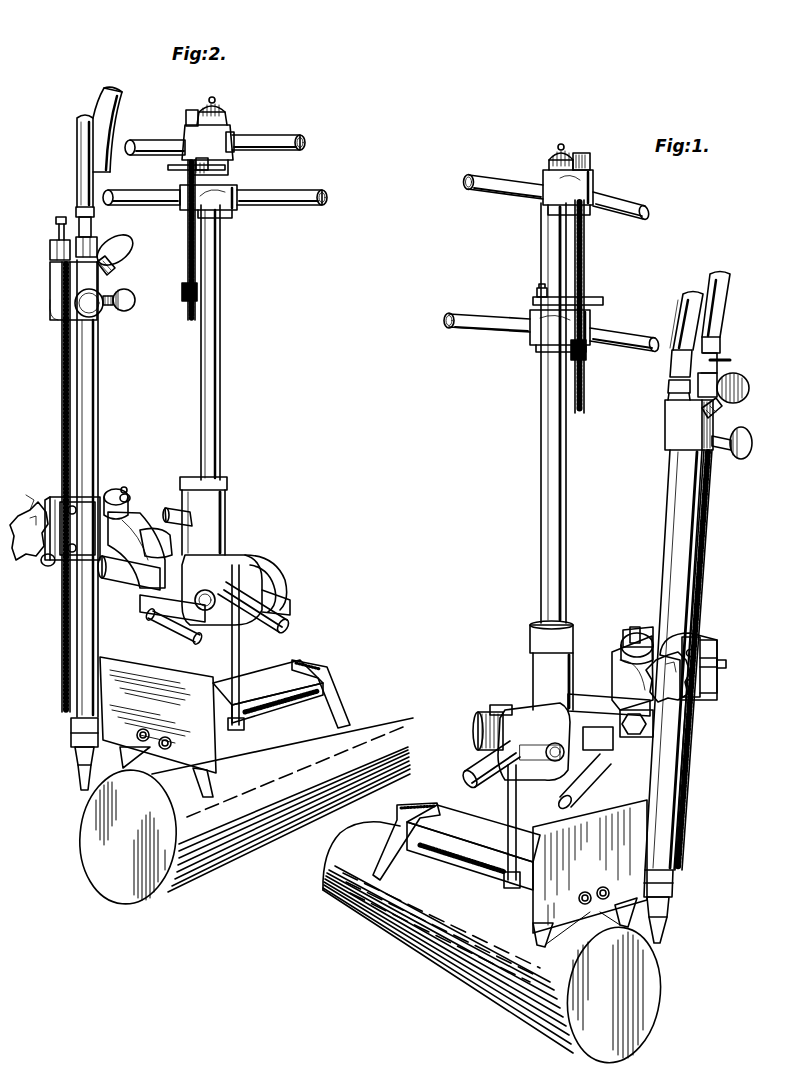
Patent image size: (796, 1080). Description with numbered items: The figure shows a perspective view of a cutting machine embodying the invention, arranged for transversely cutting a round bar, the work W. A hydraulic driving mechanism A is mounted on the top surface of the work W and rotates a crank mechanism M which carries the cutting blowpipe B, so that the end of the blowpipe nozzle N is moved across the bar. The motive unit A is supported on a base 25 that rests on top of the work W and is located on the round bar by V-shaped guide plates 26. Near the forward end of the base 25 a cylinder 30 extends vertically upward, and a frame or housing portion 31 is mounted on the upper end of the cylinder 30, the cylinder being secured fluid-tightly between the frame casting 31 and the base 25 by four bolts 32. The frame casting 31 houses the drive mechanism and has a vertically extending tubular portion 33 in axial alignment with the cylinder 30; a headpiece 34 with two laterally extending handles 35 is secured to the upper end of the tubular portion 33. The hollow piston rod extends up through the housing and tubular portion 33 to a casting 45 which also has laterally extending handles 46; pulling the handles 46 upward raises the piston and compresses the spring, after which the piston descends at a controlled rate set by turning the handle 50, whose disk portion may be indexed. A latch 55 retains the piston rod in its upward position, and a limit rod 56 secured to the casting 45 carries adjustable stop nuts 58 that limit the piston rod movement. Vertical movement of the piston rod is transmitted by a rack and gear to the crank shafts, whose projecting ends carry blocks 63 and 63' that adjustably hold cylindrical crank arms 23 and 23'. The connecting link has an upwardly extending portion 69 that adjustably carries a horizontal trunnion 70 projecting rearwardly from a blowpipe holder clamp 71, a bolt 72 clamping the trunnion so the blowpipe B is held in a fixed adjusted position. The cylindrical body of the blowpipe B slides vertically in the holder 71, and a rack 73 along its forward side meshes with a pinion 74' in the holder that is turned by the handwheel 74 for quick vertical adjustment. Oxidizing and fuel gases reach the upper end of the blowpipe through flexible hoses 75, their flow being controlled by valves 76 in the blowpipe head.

In FIG. 2, the crank arm 23 is at (282, 602).
In FIG. 1, the crank arm 23 is at (519, 776).
In FIG. 2, the adjustable crank arm 23' is at (155, 629).
In FIG. 2, the base 25 is at (302, 666).
In FIG. 1, the base 25 is at (480, 850).
In FIG. 2, the guide plates 26 is at (346, 702).
In FIG. 1, the guide plates 26 is at (390, 856).
In FIG. 2, the cylinder 30 is at (215, 660).
In FIG. 1, the cylinder 30 is at (582, 812).
In FIG. 2, the frame or housing portion 31 is at (208, 520).
In FIG. 1, the frame or housing portion 31 is at (547, 670).
In FIG. 2, the bolts 32 is at (241, 690).
In FIG. 1, the bolts 32 is at (508, 806).
In FIG. 2, the tubular portion 33 is at (212, 311).
In FIG. 1, the tubular portion 33 is at (540, 472).
In FIG. 2, the headpiece 34 is at (226, 208).
In FIG. 1, the headpiece 34 is at (548, 343).
In FIG. 2, the handles 35 is at (297, 187).
In FIG. 1, the handles 35 is at (467, 315).
In FIG. 2, the casting 45 is at (234, 133).
In FIG. 1, the casting 45 is at (560, 200).
In FIG. 2, the handles 46 is at (153, 145).
In FIG. 1, the handles 46 is at (487, 180).
In FIG. 2, the handle 50 is at (222, 118).
In FIG. 1, the handle 50 is at (551, 168).
In FIG. 2, the latch 55 is at (168, 167).
In FIG. 1, the latch 55 is at (595, 300).
In FIG. 2, the limit rod 56 is at (186, 237).
In FIG. 1, the limit rod 56 is at (586, 245).
In FIG. 2, the stop nuts 58 is at (182, 297).
In FIG. 1, the stop nuts 58 is at (587, 352).
In FIG. 1, the block 63 is at (501, 736).
In FIG. 2, the block 63' is at (252, 570).
In FIG. 2, the upwardly extending portion 69 is at (130, 498).
In FIG. 1, the upwardly extending portion 69 is at (633, 680).
In FIG. 2, the horizontal trunnion 70 is at (122, 518).
In FIG. 1, the horizontal trunnion 70 is at (643, 626).
In FIG. 2, the blowpipe holder clamp 71 is at (55, 497).
In FIG. 1, the blowpipe holder clamp 71 is at (710, 642).
In FIG. 2, the bolt 72 is at (102, 492).
In FIG. 1, the bolt 72 is at (628, 636).
In FIG. 2, the rack 73 is at (60, 393).
In FIG. 1, the rack 73 is at (712, 517).
In FIG. 2, the handwheel 74 is at (28, 544).
In FIG. 1, the handwheel 74 is at (693, 701).
In FIG. 2, the pinion 74' is at (21, 494).
In FIG. 1, the pinion 74' is at (743, 670).
In FIG. 2, the flexible hoses 75 is at (96, 112).
In FIG. 1, the flexible hoses 75 is at (720, 285).
In FIG. 2, the valves 76 is at (133, 256).
In FIG. 1, the valves 76 is at (740, 430).
In FIG. 2, the hydraulic driving mechanism A is at (238, 395).
In FIG. 1, the hydraulic driving mechanism A is at (519, 599).
In FIG. 2, the cutting blowpipe B is at (100, 392).
In FIG. 2, the crank mechanism M is at (292, 560).
In FIG. 1, the crank mechanism M is at (515, 698).
In FIG. 1, the blowpipe nozzle N is at (666, 930).
In FIG. 2, the work W is at (382, 690).
In FIG. 1, the work W is at (634, 1003).